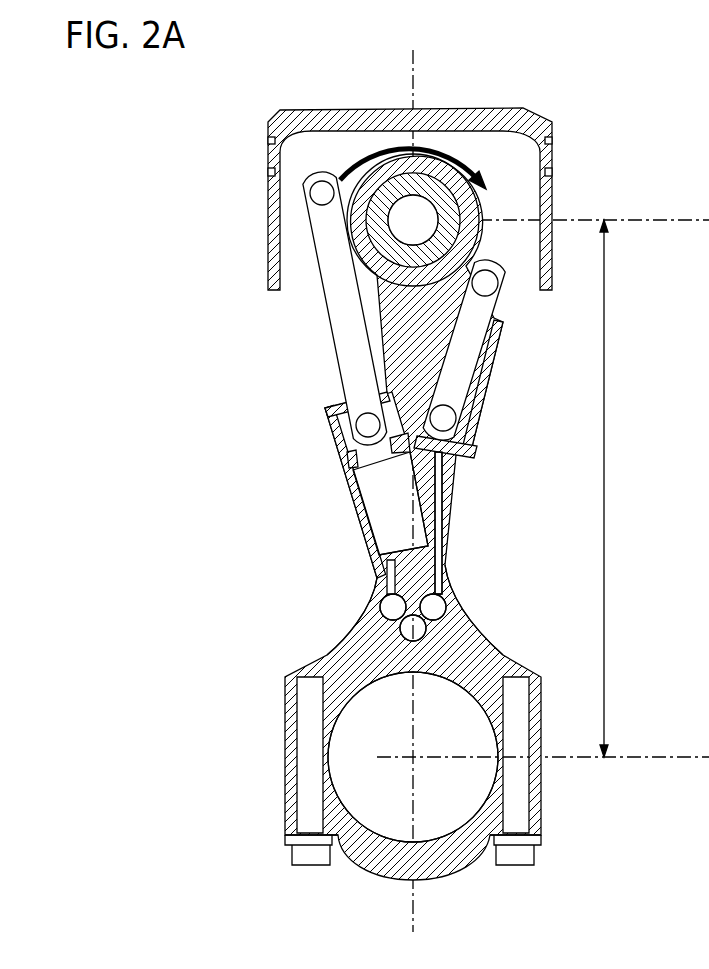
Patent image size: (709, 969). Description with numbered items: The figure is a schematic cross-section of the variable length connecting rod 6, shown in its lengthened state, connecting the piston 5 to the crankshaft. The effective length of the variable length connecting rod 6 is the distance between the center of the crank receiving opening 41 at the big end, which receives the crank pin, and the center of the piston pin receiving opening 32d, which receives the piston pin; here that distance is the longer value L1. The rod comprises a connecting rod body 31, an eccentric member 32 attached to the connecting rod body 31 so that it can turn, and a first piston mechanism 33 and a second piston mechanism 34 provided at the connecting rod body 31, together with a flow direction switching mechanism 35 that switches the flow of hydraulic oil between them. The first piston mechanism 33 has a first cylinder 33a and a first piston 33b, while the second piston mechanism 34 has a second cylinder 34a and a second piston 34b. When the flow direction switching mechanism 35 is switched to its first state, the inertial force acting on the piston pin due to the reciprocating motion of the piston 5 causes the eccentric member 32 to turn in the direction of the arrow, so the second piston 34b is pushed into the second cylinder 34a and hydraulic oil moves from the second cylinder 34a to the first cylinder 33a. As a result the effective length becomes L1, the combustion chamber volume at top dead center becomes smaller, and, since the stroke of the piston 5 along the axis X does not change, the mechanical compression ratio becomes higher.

The piston 5 is at (456, 107).
The variable length connecting rod 6 is at (253, 664).
The connecting rod body 31 is at (447, 520).
The eccentric member 32 is at (489, 203).
The piston pin receiving opening 32d is at (386, 236).
The first piston mechanism 33 is at (320, 492).
The first cylinder 33a is at (380, 532).
The first piston 33b is at (337, 441).
The second piston mechanism 34 is at (507, 425).
The second cylinder 34a is at (492, 342).
The second piston 34b is at (465, 455).
The flow direction switching mechanism 35 is at (346, 614).
The crank receiving opening 41 is at (437, 796).
The center axis X is at (410, 918).
The effective length (lengthened state) L1 is at (622, 488).